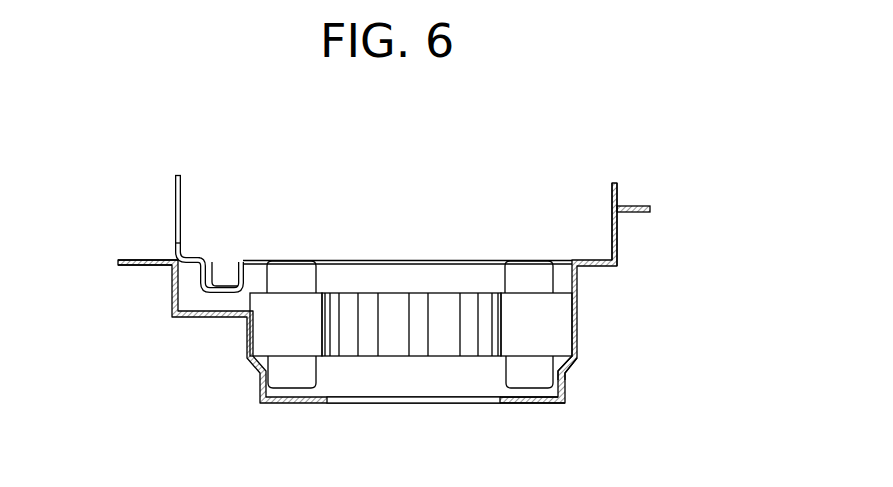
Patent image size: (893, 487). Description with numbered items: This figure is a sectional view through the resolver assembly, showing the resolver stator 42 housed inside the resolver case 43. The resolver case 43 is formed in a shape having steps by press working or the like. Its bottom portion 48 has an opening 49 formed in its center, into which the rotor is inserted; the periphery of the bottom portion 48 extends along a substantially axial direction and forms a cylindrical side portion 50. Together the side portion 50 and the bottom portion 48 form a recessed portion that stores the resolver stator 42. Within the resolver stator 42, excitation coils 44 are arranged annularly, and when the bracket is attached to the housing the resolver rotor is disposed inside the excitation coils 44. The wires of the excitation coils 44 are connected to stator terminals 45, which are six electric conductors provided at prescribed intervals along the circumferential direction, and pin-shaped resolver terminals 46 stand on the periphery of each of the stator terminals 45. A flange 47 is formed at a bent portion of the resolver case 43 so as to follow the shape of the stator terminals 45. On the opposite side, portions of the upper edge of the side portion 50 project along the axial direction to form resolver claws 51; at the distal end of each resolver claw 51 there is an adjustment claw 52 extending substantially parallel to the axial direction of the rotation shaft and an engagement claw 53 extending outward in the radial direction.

The resolver stator 42 is at (508, 255).
The resolver case 43 is at (585, 330).
The excitation coils 44 is at (292, 267).
The stator terminals 45 is at (203, 257).
The resolver terminals 46 is at (178, 175).
The flange 47 is at (132, 259).
The bottom portion 48 is at (525, 405).
The opening 49 is at (412, 403).
The side portion 50 is at (577, 355).
The resolver claws 51 is at (598, 228).
The adjustment claw 52 is at (610, 190).
The engagement claw 53 is at (633, 206).